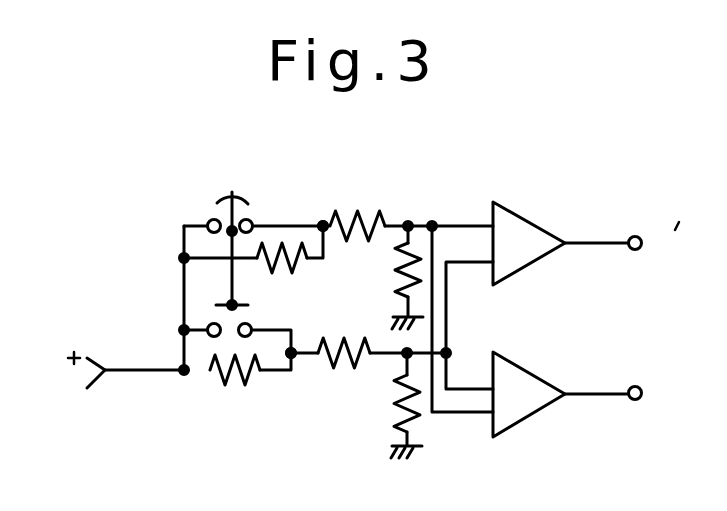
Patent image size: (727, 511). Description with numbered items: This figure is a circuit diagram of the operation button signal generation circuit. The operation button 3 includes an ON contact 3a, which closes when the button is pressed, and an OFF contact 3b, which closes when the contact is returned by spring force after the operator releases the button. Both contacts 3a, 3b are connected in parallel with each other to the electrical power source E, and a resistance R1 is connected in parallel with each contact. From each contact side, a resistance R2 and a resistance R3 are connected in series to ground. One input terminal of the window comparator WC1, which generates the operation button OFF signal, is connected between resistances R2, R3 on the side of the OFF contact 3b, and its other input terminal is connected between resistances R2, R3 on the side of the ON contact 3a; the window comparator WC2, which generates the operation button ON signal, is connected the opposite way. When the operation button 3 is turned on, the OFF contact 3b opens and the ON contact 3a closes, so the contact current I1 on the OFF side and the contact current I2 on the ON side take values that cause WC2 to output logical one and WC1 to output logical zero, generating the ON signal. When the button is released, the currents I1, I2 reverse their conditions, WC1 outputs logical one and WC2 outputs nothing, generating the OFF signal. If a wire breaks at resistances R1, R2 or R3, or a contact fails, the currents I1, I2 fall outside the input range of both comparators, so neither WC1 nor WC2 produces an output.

The operation button 3 is at (220, 203).
The ON contact 3a is at (221, 319).
The OFF contact 3b is at (253, 220).
The contact current on the side of the OFF contact I1 is at (315, 212).
The contact current on the side of the ON contact I2 is at (276, 327).
The resistance R1 is at (275, 333).
The resistance R2 is at (348, 294).
The resistance R3 is at (381, 342).
The window comparator for generating an operation button OFF signal WC1 is at (554, 244).
The window comparator for generating an operation button ON signal WC2 is at (563, 406).
The electrical power source E is at (115, 372).